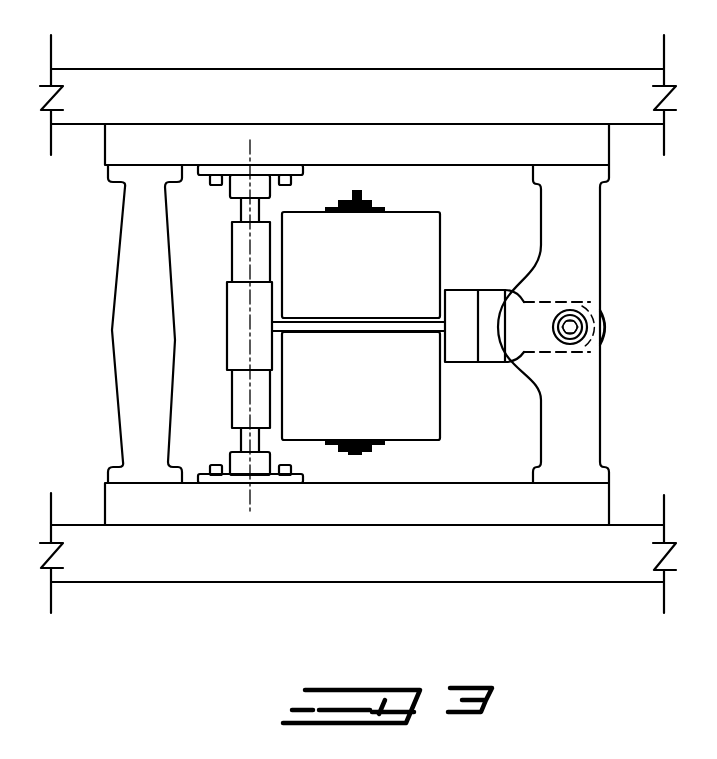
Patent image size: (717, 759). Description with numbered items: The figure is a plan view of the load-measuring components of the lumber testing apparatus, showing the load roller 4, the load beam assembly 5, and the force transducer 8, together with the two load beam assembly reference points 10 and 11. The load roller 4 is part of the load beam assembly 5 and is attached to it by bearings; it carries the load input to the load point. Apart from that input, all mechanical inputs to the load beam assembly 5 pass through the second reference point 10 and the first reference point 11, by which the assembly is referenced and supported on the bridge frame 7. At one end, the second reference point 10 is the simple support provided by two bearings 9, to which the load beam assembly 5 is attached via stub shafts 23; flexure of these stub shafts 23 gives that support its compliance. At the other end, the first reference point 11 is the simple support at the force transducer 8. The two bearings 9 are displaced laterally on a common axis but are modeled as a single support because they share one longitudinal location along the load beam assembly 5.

The load roller 4 is at (443, 241).
The load beam assembly 5 is at (463, 290).
The bridge frame 7 is at (350, 68).
The force transducer 8 is at (612, 333).
The bearings 9 is at (204, 177).
The second reference point 10 is at (252, 165).
The first reference point 11 is at (588, 315).
The stub shafts 23 is at (236, 210).